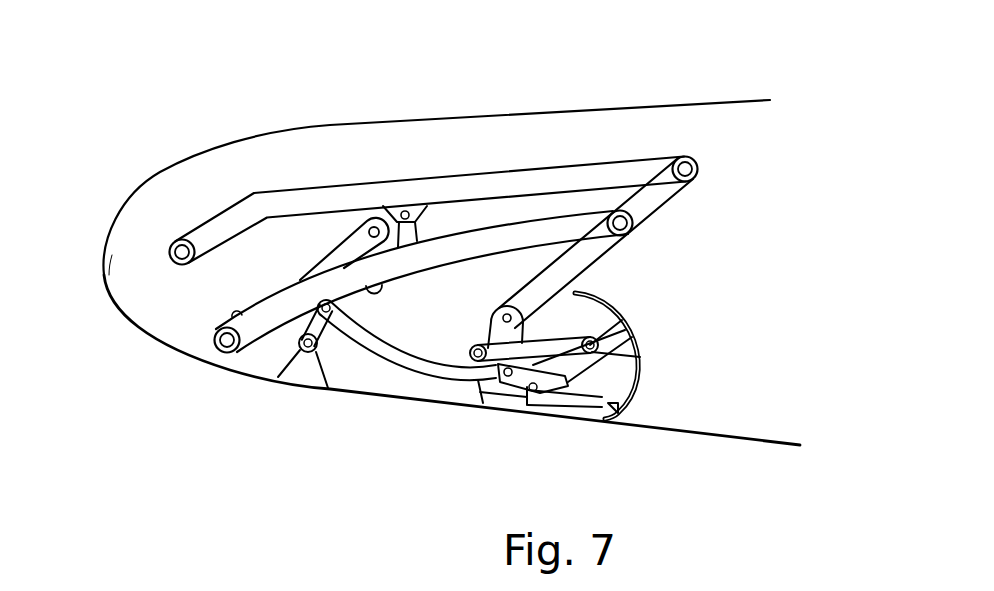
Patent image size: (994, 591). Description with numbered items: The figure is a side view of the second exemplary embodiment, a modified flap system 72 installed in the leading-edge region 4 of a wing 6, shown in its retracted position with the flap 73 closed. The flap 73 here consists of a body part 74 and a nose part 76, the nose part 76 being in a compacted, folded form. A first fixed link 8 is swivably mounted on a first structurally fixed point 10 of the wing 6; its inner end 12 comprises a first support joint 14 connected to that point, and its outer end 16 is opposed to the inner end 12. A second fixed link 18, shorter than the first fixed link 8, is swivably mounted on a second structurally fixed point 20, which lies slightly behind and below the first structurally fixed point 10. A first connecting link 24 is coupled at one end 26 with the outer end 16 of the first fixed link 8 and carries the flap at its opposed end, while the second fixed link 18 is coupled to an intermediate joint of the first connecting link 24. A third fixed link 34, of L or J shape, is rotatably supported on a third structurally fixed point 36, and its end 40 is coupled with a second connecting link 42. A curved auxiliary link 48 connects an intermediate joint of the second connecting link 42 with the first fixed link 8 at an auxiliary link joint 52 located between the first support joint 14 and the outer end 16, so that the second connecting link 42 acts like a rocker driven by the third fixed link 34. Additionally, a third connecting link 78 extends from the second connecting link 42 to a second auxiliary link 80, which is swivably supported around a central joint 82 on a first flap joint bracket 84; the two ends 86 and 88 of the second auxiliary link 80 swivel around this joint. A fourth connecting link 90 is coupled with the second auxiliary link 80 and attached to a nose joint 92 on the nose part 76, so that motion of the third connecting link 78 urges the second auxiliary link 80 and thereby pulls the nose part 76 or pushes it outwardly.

The leading-edge region 4 is at (306, 100).
The wing 6 is at (378, 138).
The first fixed link 8 is at (565, 168).
The first structurally fixed point 10 is at (164, 226).
The inner end 12 is at (154, 271).
The first support joint 14 is at (182, 266).
The outer end 16 is at (712, 152).
The second fixed link 18 is at (446, 243).
The second structurally fixed point 20 is at (216, 312).
The first connecting link 24 is at (598, 262).
The end 26 is at (705, 192).
The third fixed link 34 is at (366, 232).
The third structurally fixed point 36 is at (253, 290).
The end 40 is at (371, 203).
The second connecting link 42 is at (319, 330).
The auxiliary link 48 is at (374, 296).
The auxiliary link joint 52 is at (440, 195).
The modified flap system 72 is at (528, 122).
The flap 73 is at (452, 460).
The body part 74 is at (399, 400).
The nose part 76 is at (642, 348).
The third connecting link 78 is at (430, 360).
The second auxiliary link 80 is at (497, 370).
The central joint 82 is at (538, 366).
The first flap joint bracket 84 is at (502, 400).
The end 86 is at (537, 400).
The end 88 is at (478, 330).
The fourth connecting link 90 is at (555, 340).
The nose joint 92 is at (640, 338).